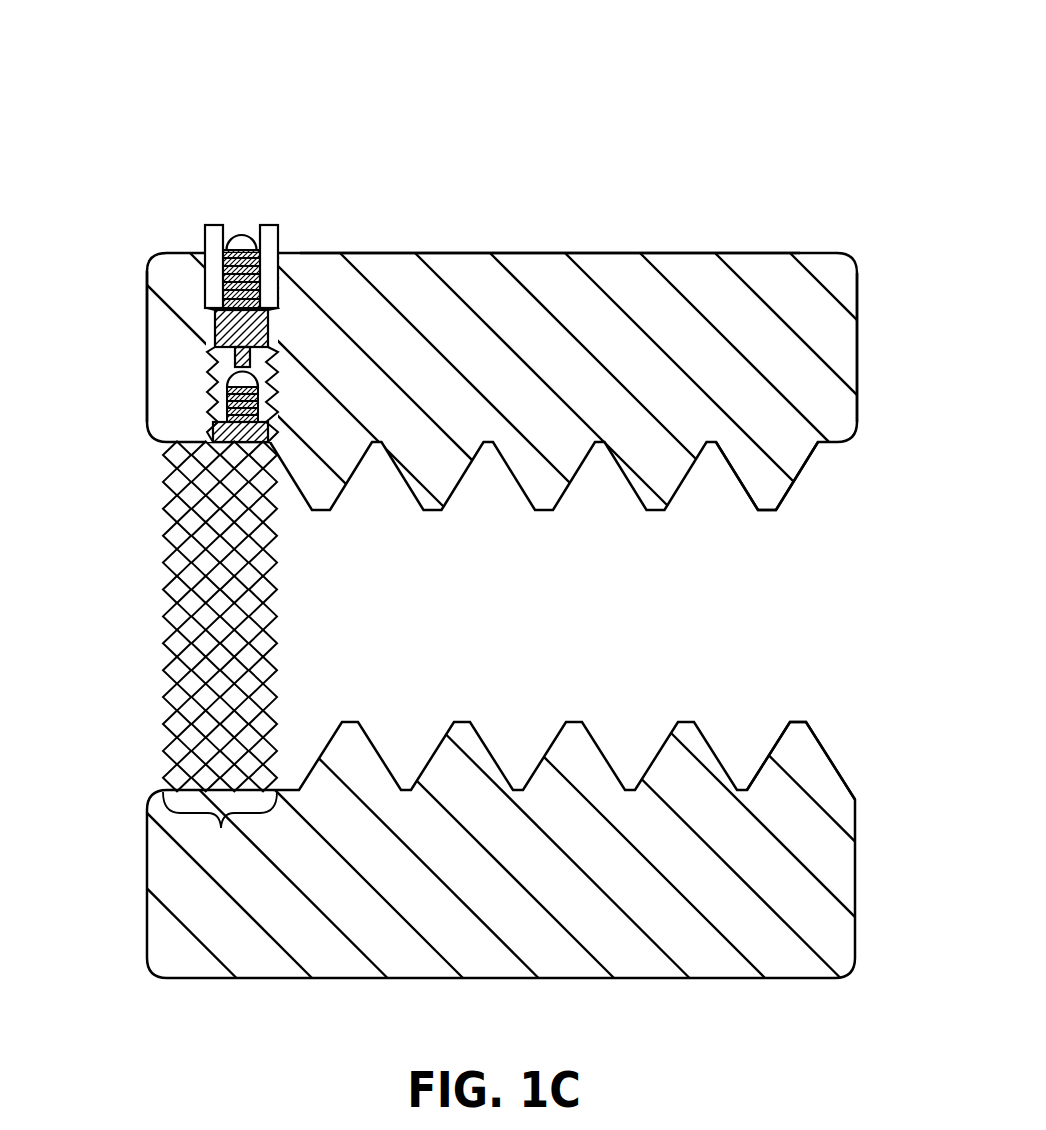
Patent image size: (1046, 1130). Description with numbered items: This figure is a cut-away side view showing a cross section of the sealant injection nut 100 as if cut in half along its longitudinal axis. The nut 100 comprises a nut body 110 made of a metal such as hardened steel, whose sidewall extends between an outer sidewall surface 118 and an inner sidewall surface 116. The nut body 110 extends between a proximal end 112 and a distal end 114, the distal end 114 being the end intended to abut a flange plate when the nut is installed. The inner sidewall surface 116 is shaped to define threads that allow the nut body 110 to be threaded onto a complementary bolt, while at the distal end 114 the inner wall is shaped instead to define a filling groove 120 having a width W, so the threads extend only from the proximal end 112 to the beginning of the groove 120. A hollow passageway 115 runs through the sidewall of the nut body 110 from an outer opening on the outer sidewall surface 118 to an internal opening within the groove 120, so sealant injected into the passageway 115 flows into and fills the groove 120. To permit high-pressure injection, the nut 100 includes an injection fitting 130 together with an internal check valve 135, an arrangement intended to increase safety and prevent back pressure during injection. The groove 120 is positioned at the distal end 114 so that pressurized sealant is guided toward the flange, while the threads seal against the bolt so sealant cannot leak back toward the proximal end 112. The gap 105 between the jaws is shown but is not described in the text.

The sealant injection nut 100 is at (680, 86).
The gap between jaws 105 is at (792, 624).
The nut body 110 is at (757, 249).
The proximal end 112 is at (864, 346).
The distal end 114 is at (142, 320).
The hollow passageway 115 is at (250, 449).
The inner sidewall surface 116 is at (540, 758).
The outer sidewall surface 118 is at (522, 252).
The filling groove 120 is at (160, 698).
The injection fitting 130 is at (201, 218).
The internal check valve 135 is at (202, 370).
The width of the filling groove W is at (220, 825).